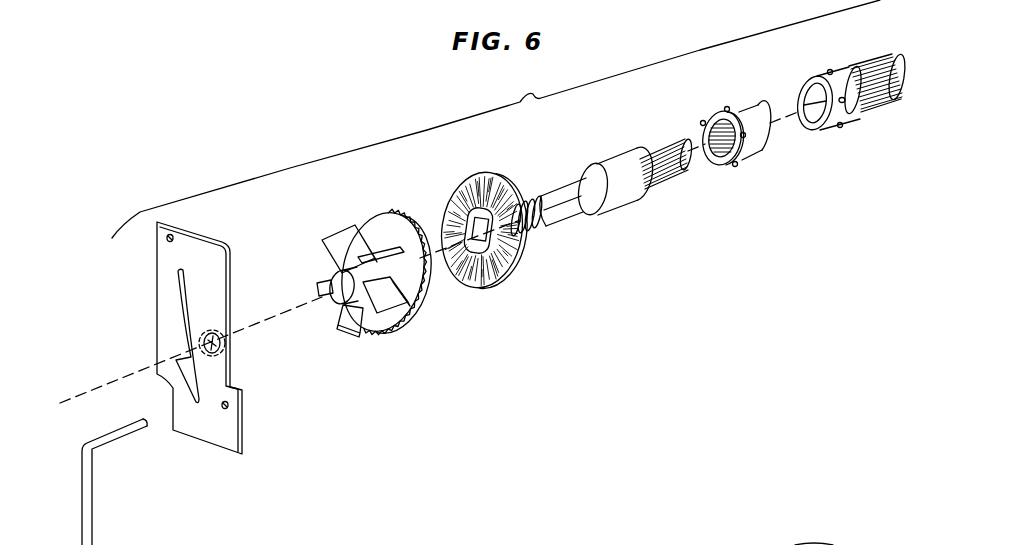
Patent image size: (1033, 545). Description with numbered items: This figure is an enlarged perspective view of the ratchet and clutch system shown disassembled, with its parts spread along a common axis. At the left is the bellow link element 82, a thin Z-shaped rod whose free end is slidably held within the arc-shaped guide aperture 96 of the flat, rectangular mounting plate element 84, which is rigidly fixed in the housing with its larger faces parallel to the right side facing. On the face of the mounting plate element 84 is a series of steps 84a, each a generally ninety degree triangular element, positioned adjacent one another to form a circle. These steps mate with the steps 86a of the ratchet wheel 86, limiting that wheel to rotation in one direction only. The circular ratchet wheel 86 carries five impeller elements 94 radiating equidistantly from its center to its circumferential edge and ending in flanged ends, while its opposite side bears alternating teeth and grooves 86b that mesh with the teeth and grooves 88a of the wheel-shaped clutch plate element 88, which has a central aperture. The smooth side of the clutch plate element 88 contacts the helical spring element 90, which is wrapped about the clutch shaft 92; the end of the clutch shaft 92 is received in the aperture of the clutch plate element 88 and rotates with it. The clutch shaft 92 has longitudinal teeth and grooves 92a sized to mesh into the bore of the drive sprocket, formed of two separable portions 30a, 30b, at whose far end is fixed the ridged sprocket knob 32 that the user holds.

The separable portion of drive sprocket 30a is at (750, 150).
The separable portion of drive sprocket 30b is at (833, 130).
The sprocket knob 32 is at (905, 67).
The bellow link element 82 is at (125, 432).
The mounting plate element 84 is at (228, 430).
The steps 84a is at (222, 334).
The ratchet wheel 86 is at (403, 327).
The steps of ratchet wheel 86a is at (340, 287).
The teeth and grooves of ratchet wheel 86b is at (418, 295).
The clutch plate element 88 is at (520, 263).
The teeth and grooves of clutch plate 88a is at (492, 197).
The spring element 90 is at (543, 230).
The clutch shaft 92 is at (627, 207).
The teeth and grooves of clutch shaft 92a is at (658, 178).
The impeller elements 94 is at (360, 327).
The guide aperture 96 is at (180, 300).